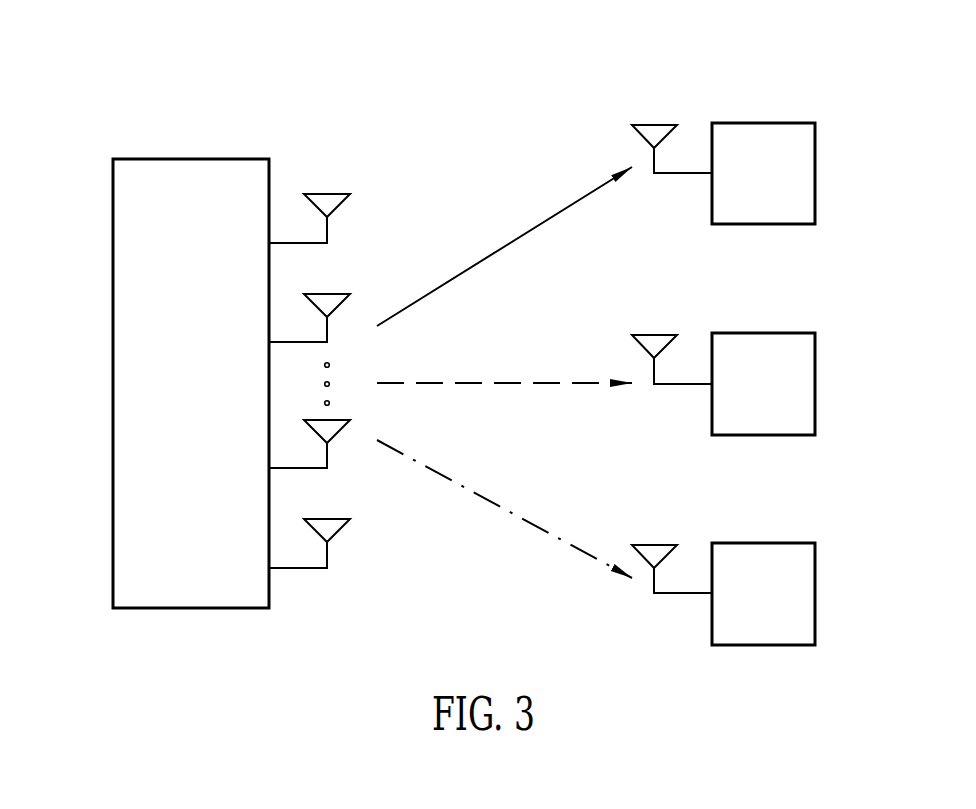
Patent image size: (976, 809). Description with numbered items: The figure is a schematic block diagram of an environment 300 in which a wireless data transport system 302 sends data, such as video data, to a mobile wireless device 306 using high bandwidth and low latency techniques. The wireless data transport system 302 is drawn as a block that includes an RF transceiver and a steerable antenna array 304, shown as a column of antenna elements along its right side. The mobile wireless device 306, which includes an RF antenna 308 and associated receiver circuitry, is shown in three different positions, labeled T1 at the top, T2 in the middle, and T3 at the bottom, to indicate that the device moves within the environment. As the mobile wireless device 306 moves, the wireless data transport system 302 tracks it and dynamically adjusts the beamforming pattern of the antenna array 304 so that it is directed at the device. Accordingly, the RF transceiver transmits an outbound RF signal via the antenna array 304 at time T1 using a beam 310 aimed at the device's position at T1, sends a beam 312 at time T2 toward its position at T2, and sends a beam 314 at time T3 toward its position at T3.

The environment 300 is at (157, 55).
The wireless data transport system 302 is at (193, 159).
The steerable antenna array 304 is at (362, 545).
The mobile wireless device 306 is at (815, 173).
The RF antenna 308 is at (652, 124).
The beam 310 is at (492, 252).
The beam 312 is at (497, 382).
The beam 314 is at (485, 498).